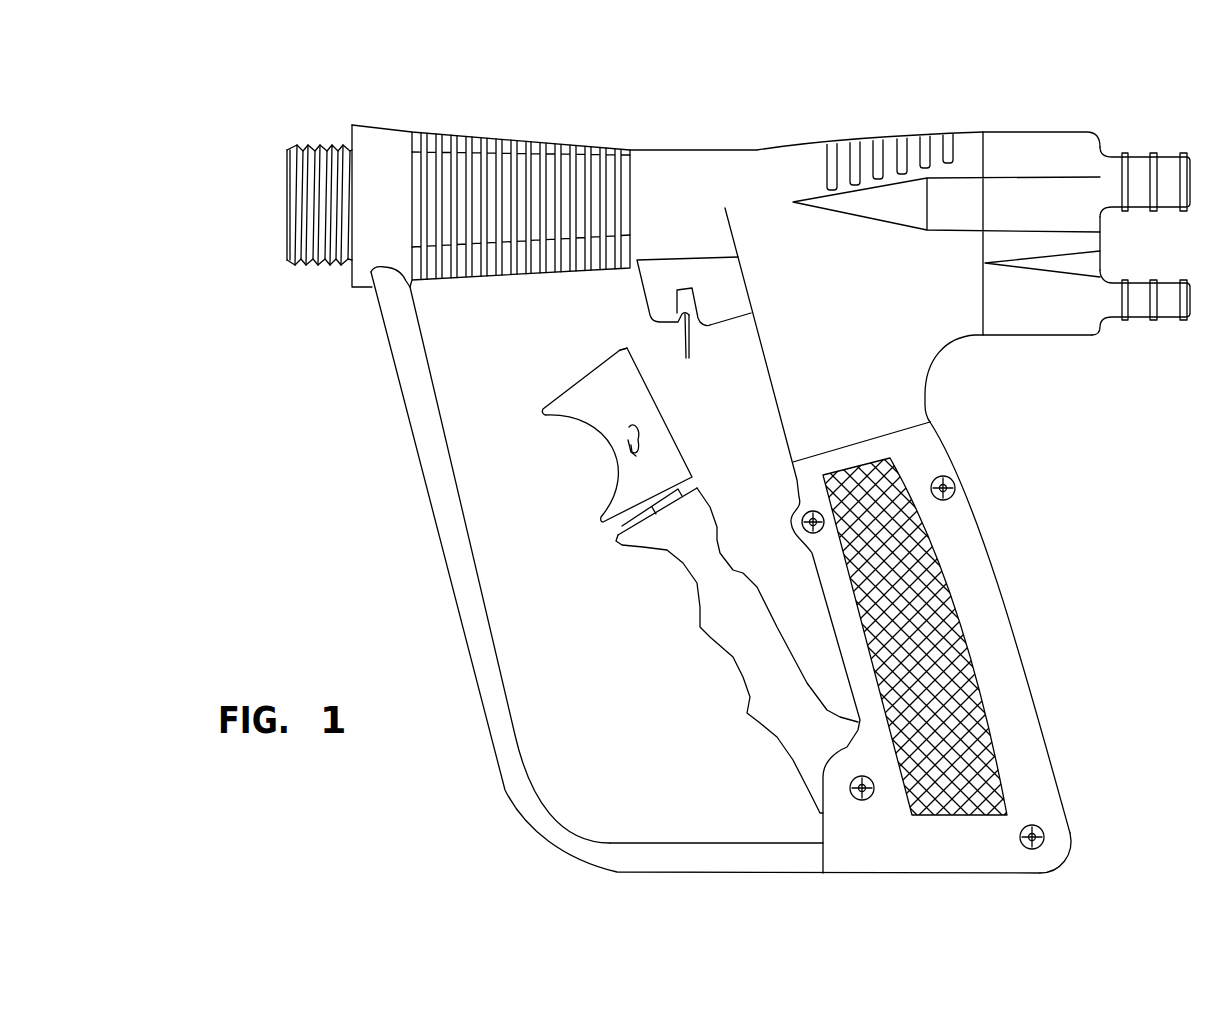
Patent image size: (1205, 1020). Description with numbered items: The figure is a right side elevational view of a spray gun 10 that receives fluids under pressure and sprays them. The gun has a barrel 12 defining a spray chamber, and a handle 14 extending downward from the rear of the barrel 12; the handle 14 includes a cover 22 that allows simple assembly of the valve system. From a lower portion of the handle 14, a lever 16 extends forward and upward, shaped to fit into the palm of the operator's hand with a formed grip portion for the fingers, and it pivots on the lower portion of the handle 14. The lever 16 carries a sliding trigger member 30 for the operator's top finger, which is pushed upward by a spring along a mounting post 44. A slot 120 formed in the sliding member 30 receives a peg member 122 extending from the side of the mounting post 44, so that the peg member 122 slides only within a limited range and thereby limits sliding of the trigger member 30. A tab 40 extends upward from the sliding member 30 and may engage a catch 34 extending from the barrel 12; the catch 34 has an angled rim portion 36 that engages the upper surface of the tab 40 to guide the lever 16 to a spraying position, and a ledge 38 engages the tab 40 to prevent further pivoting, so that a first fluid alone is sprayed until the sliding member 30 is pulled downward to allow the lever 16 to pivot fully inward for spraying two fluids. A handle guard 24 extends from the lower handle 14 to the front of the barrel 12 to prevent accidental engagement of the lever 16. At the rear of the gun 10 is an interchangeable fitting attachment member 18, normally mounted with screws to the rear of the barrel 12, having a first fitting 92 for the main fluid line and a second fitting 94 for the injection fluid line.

The spray gun 10 is at (270, 117).
The barrel 12 is at (498, 132).
The handle 14 is at (987, 568).
The lever 16 is at (733, 658).
The interchangeable fitting attachment member 18 is at (1052, 130).
The cover 22 is at (1037, 697).
The handle guard 24 is at (433, 547).
The sliding trigger member 30 is at (552, 422).
The catch 34 is at (687, 358).
The angled rim portion 36 is at (657, 325).
The ledge 38 is at (720, 323).
The tab 40 is at (618, 358).
The mounting post 44 is at (637, 517).
The first fitting 92 is at (1164, 152).
The second fitting 94 is at (1163, 318).
The slot 120 is at (635, 452).
The peg member 122 is at (640, 438).